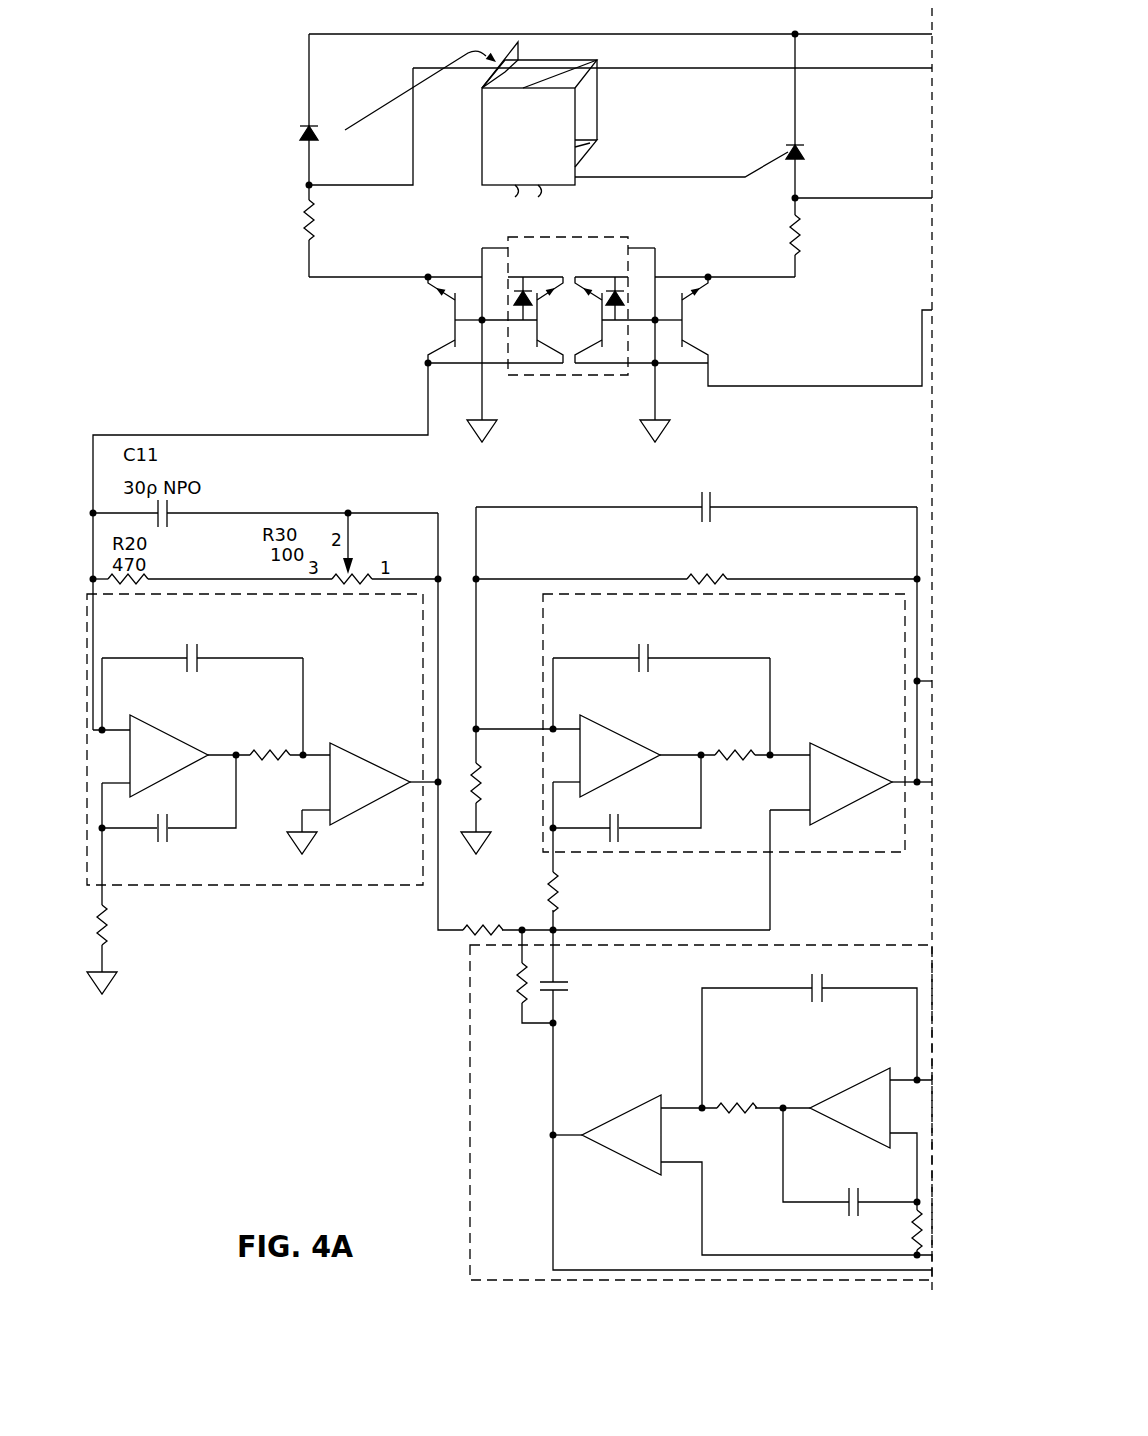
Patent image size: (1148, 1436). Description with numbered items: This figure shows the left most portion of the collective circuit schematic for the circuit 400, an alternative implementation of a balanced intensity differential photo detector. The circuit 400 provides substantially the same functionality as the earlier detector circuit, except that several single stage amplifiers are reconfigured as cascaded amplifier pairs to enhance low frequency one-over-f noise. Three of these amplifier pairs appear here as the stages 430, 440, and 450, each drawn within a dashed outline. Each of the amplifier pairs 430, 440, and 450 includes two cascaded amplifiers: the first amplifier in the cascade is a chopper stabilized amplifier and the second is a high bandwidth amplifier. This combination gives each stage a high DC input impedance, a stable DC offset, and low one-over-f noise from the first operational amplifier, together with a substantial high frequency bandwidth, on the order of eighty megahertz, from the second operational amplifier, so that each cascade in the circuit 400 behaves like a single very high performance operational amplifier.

The circuit 400 is at (236, 82).
The amplifier pair 430 is at (338, 908).
The amplifier pair 440 is at (820, 871).
The amplifier pair 450 is at (456, 1132).